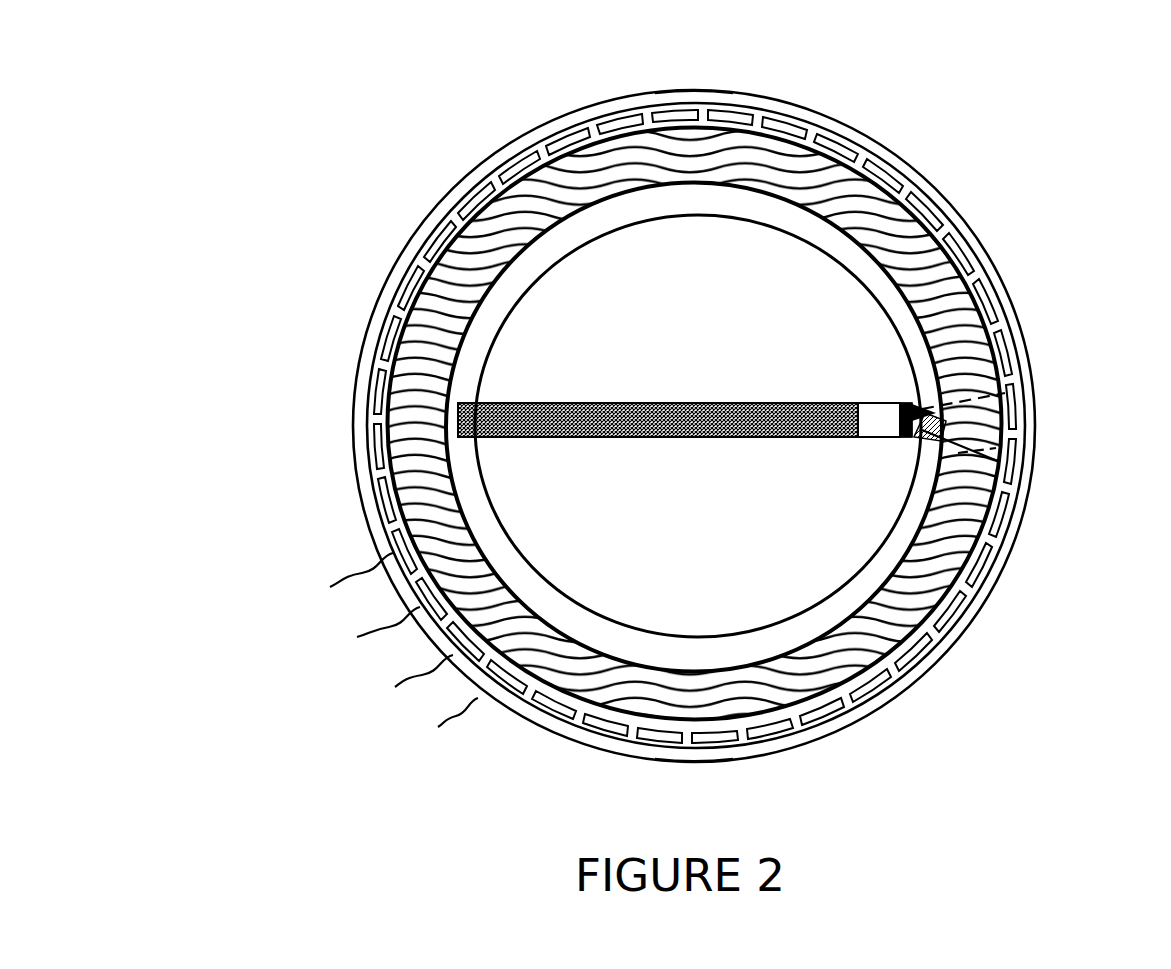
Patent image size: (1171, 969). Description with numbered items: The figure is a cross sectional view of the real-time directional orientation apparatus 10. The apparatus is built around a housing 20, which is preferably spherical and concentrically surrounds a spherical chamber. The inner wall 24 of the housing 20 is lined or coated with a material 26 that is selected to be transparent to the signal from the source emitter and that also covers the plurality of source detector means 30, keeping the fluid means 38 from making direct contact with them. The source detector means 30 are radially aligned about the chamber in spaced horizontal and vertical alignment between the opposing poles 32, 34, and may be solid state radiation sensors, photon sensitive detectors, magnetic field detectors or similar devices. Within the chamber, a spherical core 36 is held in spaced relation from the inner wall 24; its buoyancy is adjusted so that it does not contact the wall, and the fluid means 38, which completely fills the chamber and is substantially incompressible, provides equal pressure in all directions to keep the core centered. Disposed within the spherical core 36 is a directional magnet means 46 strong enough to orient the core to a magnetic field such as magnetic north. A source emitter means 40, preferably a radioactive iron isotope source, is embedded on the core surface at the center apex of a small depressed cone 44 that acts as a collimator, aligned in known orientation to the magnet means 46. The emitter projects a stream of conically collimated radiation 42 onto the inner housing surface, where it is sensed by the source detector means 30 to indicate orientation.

The real-time directional orientation apparatus 10 is at (286, 181).
The housing 20 is at (566, 140).
The inner wall 24 is at (900, 185).
The material 26 is at (378, 463).
The source detector means 30 is at (1015, 387).
The pole 32 is at (693, 90).
The pole 34 is at (693, 762).
The spherical core 36 is at (484, 330).
The fluid means 38 is at (893, 615).
The source emitter means 40 is at (913, 405).
The conically collimated radiation 42 is at (965, 458).
The depressed cone 44 is at (913, 437).
The directional magnet means 46 is at (660, 403).